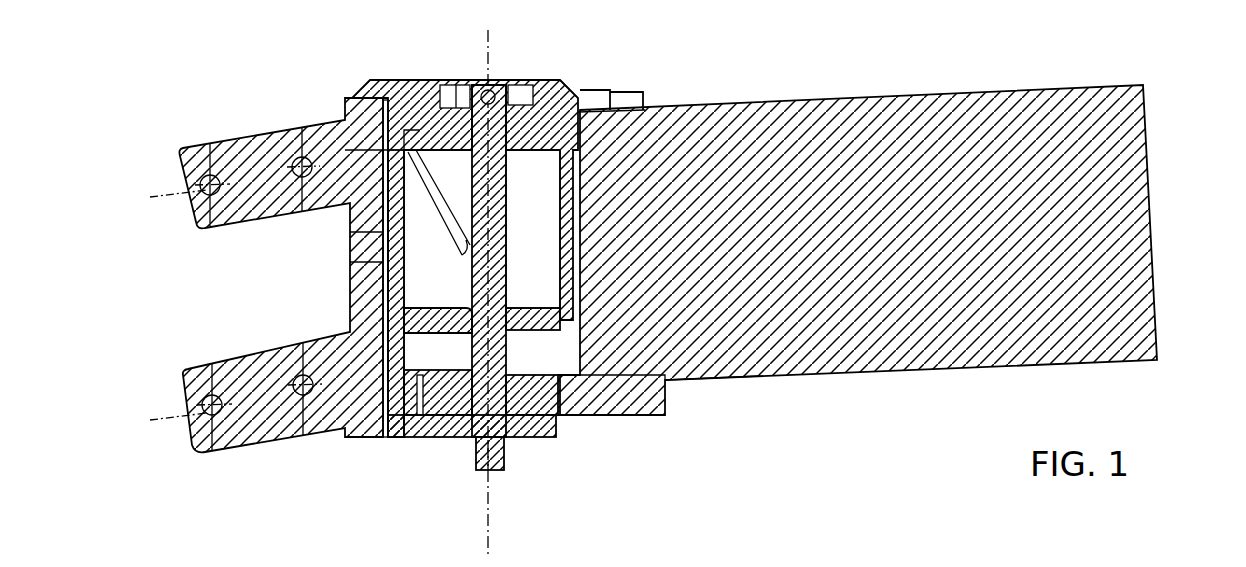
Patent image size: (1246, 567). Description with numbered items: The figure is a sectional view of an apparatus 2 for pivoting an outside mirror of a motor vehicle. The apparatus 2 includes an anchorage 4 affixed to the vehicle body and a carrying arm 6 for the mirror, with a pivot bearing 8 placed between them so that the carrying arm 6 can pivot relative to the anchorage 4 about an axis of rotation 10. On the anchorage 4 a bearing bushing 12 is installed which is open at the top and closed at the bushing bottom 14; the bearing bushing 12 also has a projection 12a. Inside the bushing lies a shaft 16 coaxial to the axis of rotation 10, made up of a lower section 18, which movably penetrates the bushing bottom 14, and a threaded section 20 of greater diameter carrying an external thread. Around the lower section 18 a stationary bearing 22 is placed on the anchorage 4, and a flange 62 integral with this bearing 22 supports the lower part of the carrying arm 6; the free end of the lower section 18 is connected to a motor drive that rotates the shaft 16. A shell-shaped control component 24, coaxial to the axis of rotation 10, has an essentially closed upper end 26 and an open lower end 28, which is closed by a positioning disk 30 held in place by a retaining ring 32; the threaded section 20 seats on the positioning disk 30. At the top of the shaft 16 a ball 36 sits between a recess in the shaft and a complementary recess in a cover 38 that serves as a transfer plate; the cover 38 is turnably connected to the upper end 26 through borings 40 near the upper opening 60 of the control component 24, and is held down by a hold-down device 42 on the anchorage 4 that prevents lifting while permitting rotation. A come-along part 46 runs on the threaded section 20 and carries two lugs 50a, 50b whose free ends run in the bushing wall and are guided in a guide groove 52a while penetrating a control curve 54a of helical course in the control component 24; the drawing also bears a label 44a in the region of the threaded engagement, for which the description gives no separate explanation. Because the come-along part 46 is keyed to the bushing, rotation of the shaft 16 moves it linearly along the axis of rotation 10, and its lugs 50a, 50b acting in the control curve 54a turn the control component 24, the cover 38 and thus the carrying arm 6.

The apparatus 2 is at (758, 470).
The anchorage 4 is at (1130, 238).
The carrying arm 6 is at (185, 160).
The pivot bearing 8 is at (550, 485).
The axis of rotation 10 is at (488, 492).
The bearing bushing 12 is at (560, 352).
The projection 12a is at (573, 322).
The bushing bottom 14 is at (425, 432).
The shaft 16 is at (537, 221).
The lower section 18 is at (508, 455).
The threaded section 20 is at (500, 250).
The stationary bearing 22 is at (572, 432).
The control component 24 is at (390, 295).
The upper end 26 is at (562, 86).
The lower end 28 is at (368, 434).
The positioning disk 30 is at (442, 310).
The retaining ring 32 is at (565, 330).
The ball 36 is at (492, 92).
The cover 38 is at (348, 92).
The borings 40 is at (456, 78).
The hold-down device 42 is at (640, 100).
The spring element 44a is at (439, 202).
The come-along part 46 is at (412, 130).
The lug 50a is at (405, 158).
The lug 50b is at (580, 140).
The guide groove 52a is at (392, 236).
The control curve 54a is at (395, 262).
The upper opening 60 is at (515, 110).
The flange 62 is at (383, 420).